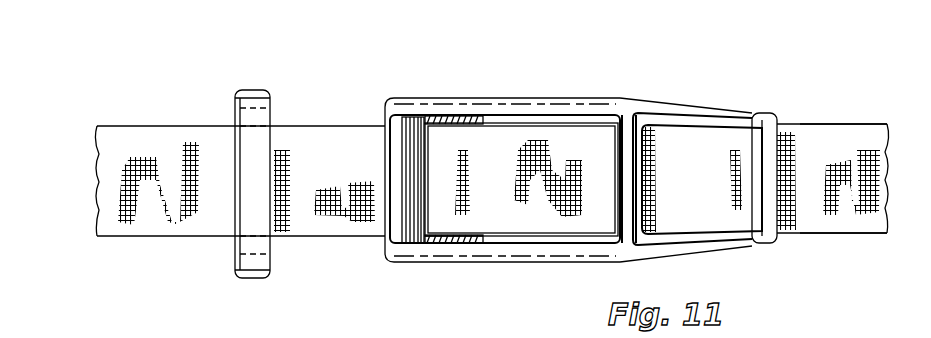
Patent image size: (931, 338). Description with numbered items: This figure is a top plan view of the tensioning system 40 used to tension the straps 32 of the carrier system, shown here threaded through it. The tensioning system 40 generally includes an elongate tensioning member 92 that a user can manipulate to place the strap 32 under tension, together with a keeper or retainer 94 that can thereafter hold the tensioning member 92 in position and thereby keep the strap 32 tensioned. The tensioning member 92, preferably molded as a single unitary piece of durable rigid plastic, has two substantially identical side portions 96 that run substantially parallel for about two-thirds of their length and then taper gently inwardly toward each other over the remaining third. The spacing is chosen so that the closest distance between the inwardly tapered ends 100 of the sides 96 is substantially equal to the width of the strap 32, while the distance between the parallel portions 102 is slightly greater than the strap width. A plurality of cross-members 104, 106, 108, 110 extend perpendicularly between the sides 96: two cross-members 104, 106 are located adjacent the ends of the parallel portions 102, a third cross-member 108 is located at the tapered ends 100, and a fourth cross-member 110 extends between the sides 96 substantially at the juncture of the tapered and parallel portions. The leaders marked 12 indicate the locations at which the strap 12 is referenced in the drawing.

The belt strap 12 is at (183, 245).
The strap 32 is at (872, 128).
The tensioning system 40 is at (555, 170).
The tensioning member 92 is at (586, 95).
The keeper 94 is at (254, 90).
The side portions 96 is at (505, 100).
The inwardly tapered ends 100 is at (752, 112).
The parallel portions 102 is at (472, 100).
The cross-member 104 is at (412, 163).
The cross-member 106 is at (452, 246).
The third cross-member 108 is at (777, 152).
The fourth cross-member 110 is at (632, 196).